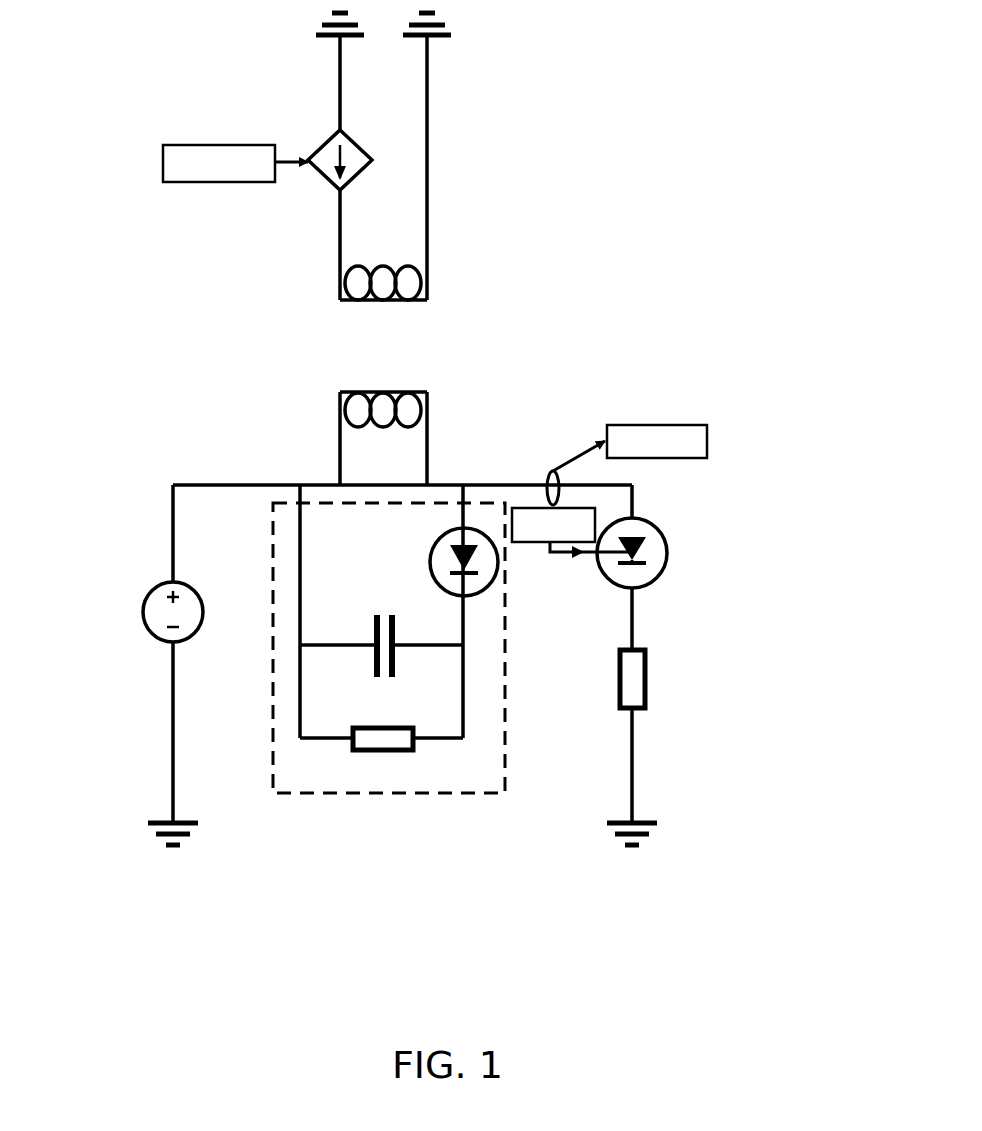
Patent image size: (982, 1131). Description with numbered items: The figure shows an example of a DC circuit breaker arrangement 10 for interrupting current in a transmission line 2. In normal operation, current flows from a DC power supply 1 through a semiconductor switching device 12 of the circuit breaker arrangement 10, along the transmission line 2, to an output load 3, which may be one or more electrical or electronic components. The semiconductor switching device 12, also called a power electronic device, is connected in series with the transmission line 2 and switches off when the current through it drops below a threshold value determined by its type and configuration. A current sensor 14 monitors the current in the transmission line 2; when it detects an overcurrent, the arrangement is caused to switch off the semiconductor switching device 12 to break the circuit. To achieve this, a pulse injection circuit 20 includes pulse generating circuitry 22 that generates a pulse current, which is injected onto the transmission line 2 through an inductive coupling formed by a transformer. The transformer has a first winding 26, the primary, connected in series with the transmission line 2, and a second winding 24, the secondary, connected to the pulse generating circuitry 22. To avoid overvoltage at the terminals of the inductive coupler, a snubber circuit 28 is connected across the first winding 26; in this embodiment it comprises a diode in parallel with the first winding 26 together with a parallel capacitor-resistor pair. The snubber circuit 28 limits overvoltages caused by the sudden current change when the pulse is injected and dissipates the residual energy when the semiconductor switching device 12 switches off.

The DC power supply 1 is at (147, 625).
The transmission line 2 is at (183, 483).
The output load 3 is at (645, 677).
The circuit breaker arrangement 10 is at (713, 227).
The semiconductor switching device 12 is at (665, 568).
The current sensor 14 is at (553, 470).
The pulse injection circuit 20 is at (473, 188).
The pulse generating circuitry 22 is at (315, 150).
The second winding 24 is at (338, 283).
The first winding 26 is at (340, 410).
The snubber circuit 28 is at (470, 793).